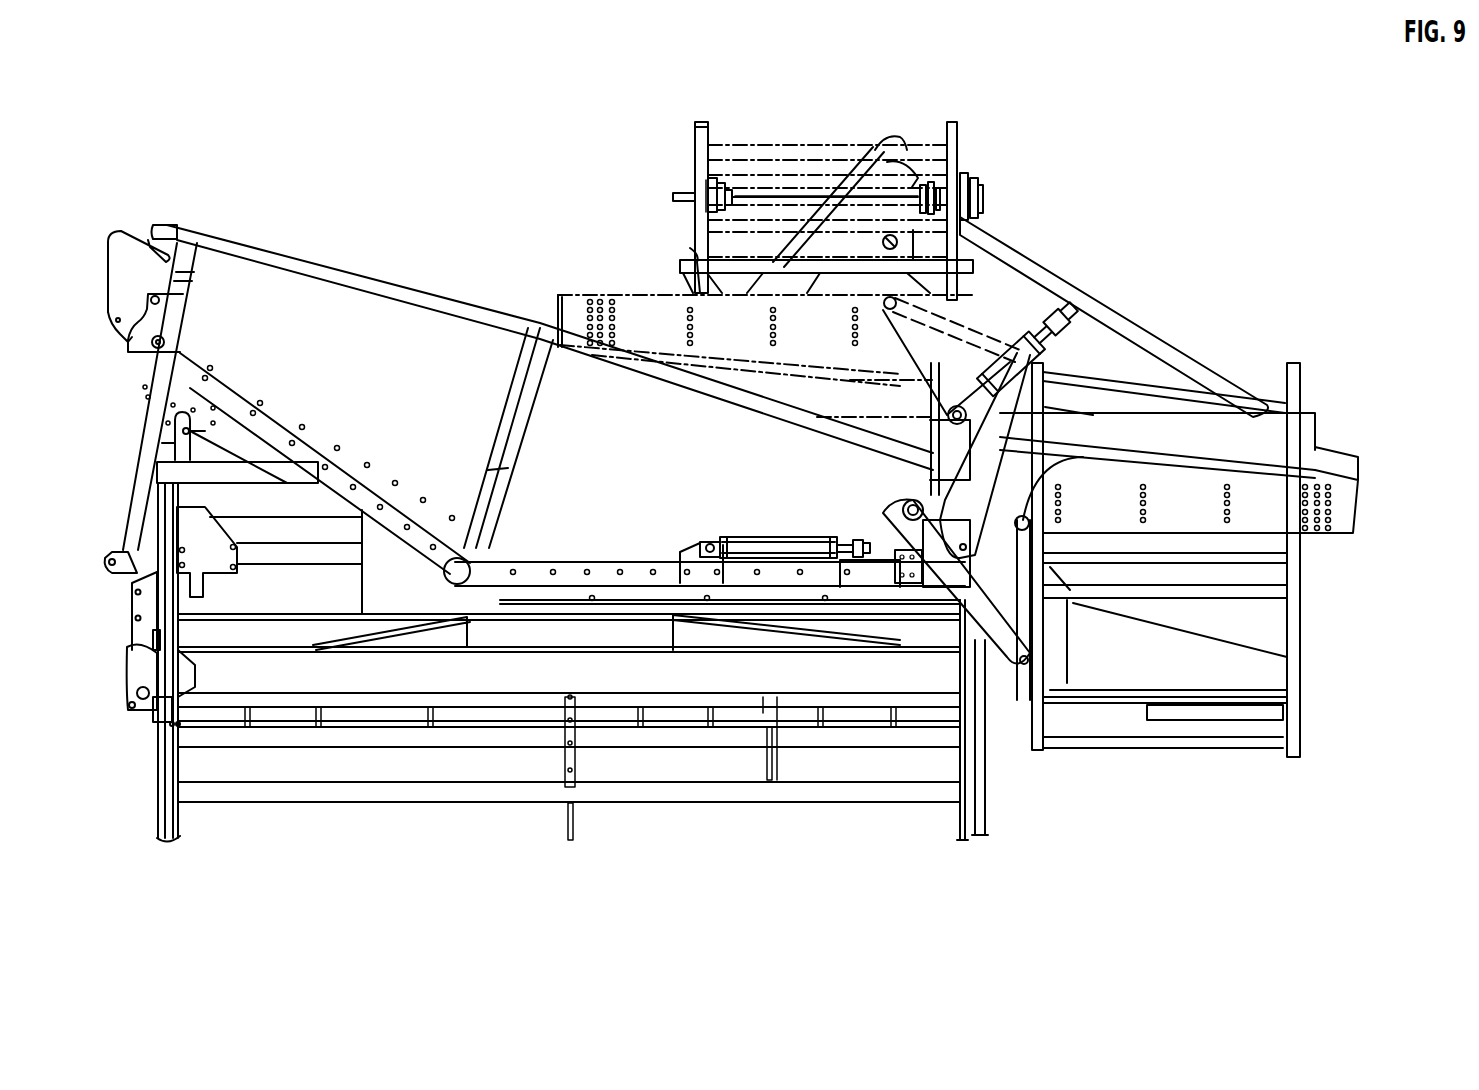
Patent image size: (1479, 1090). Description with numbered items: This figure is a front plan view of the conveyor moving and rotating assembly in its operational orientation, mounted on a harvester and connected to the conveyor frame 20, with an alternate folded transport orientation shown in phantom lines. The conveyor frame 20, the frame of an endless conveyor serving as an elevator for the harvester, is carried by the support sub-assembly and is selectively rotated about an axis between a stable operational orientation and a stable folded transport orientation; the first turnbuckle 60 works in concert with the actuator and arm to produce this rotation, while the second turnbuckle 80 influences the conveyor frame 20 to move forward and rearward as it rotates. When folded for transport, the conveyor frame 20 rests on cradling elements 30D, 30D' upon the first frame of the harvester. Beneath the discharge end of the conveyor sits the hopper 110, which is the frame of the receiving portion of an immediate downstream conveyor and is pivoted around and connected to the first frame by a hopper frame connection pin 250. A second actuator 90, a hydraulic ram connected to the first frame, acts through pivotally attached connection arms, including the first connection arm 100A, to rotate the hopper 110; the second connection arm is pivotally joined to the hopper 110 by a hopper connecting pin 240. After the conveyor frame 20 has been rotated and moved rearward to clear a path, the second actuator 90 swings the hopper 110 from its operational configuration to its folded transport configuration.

The conveyor frame 20 is at (707, 140).
The hopper 110 is at (647, 320).
The cradling element 30D' is at (651, 188).
The cradling element 30D is at (746, 225).
The hopper frame connection pin 250 is at (973, 340).
The second turnbuckle 80 is at (1012, 340).
The first turnbuckle 60 is at (1083, 297).
The hopper connecting pin 240 is at (1107, 450).
The second actuator 90 is at (770, 543).
The first connection arm 100A is at (940, 523).